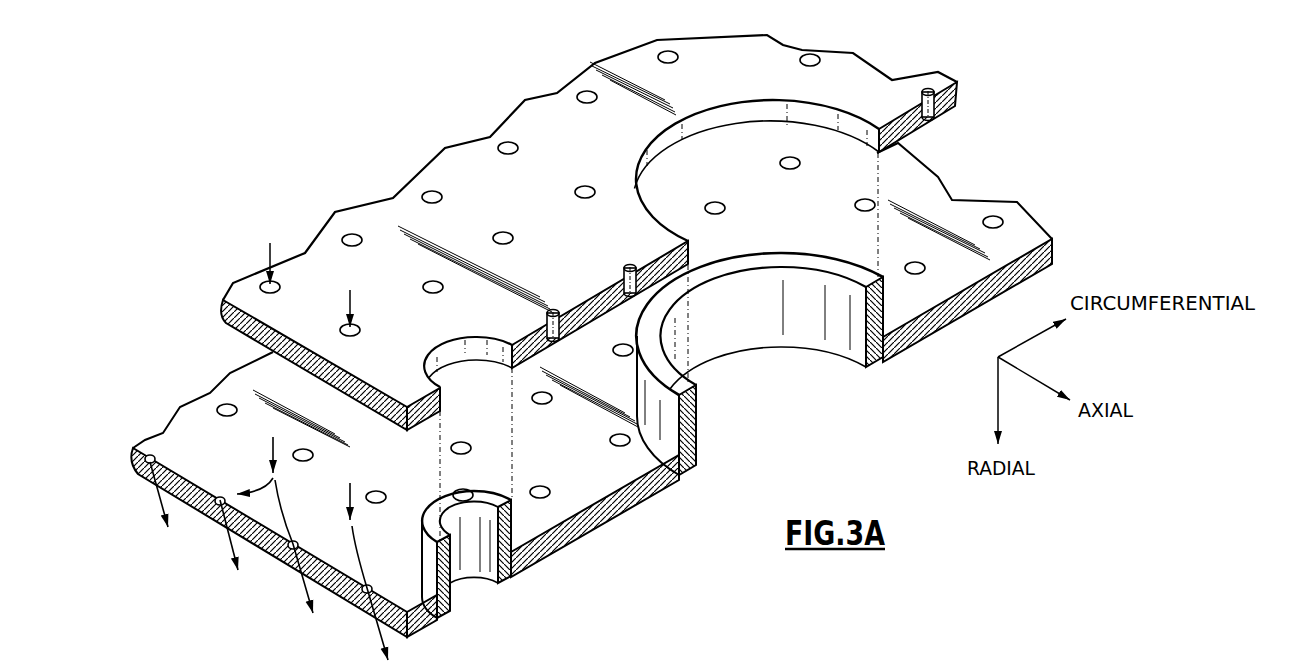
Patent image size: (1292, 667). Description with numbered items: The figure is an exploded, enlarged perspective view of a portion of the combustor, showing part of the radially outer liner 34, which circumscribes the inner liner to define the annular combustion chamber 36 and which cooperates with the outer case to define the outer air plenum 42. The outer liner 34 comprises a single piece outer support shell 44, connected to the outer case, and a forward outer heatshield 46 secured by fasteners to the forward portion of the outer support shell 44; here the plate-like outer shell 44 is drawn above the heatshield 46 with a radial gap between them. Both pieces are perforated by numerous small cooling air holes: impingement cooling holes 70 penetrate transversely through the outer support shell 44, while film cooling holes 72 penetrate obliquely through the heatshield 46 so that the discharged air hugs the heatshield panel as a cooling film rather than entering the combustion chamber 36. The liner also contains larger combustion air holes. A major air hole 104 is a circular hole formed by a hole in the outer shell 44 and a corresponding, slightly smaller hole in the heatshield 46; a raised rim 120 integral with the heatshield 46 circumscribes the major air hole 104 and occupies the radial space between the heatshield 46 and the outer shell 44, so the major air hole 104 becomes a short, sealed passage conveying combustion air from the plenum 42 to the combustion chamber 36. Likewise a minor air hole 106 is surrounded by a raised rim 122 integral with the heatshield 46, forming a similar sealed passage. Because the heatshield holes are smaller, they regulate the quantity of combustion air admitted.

The radially outer liner 34 is at (651, 351).
The annular combustion chamber 36 is at (701, 534).
The outer air plenum 42 is at (418, 134).
The outer support shell 44 is at (401, 217).
The forward outer heatshield 46 is at (246, 368).
The impingement cooling holes 70 is at (348, 329).
The film cooling holes 72 is at (220, 500).
The major air holes 104 is at (804, 382).
The minor air holes 106 is at (473, 600).
The raised rim 120 is at (833, 263).
The raised rim 122 is at (436, 512).